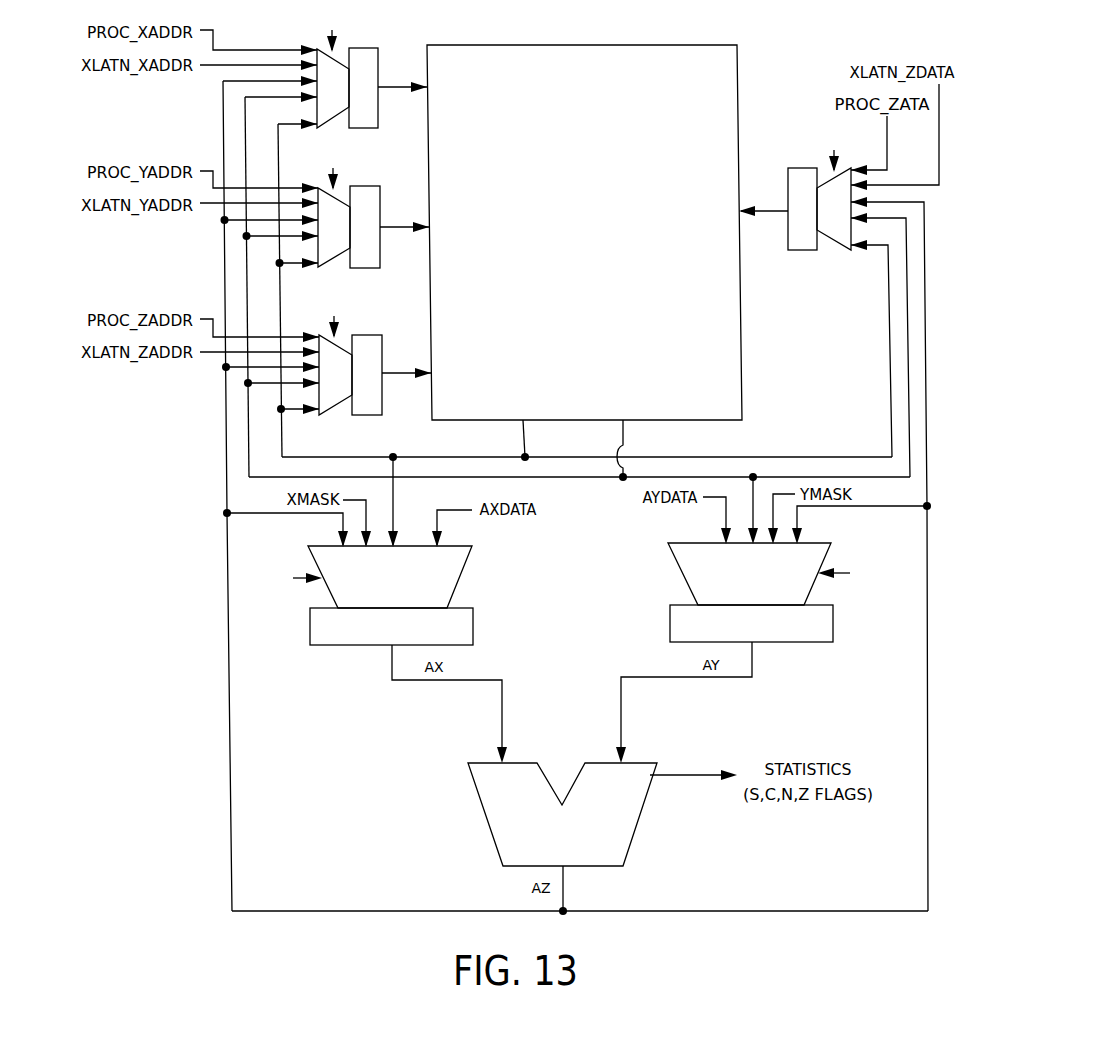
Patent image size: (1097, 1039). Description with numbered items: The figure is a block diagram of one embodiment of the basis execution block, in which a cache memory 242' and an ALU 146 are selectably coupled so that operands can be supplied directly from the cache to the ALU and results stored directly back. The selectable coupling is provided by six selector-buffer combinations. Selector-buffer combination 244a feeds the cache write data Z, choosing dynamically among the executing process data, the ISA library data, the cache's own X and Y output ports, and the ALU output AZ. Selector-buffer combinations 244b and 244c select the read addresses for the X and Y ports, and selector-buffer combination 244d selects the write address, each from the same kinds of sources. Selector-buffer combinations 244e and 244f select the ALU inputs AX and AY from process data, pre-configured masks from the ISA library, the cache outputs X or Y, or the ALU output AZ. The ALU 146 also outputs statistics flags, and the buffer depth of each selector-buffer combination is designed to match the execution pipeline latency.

The cache memory 242' is at (584, 212).
The selector-buffer combination 244a is at (800, 250).
The selector-buffer combination 244b is at (362, 48).
The selector-buffer combination 244c is at (365, 186).
The selector-buffer combination 244d is at (367, 335).
The selector-buffer combination 244e is at (458, 582).
The selector-buffer combination 244f is at (687, 584).
The ALU 146 is at (625, 830).